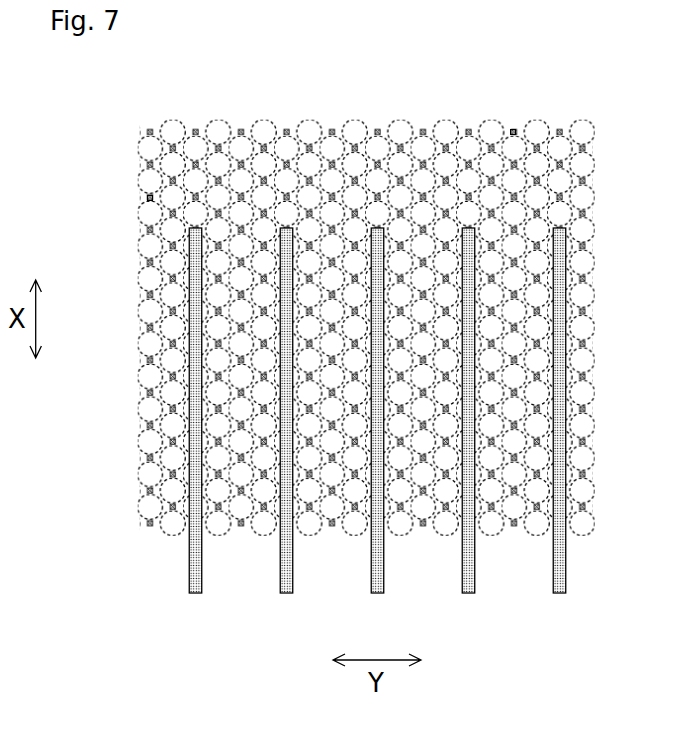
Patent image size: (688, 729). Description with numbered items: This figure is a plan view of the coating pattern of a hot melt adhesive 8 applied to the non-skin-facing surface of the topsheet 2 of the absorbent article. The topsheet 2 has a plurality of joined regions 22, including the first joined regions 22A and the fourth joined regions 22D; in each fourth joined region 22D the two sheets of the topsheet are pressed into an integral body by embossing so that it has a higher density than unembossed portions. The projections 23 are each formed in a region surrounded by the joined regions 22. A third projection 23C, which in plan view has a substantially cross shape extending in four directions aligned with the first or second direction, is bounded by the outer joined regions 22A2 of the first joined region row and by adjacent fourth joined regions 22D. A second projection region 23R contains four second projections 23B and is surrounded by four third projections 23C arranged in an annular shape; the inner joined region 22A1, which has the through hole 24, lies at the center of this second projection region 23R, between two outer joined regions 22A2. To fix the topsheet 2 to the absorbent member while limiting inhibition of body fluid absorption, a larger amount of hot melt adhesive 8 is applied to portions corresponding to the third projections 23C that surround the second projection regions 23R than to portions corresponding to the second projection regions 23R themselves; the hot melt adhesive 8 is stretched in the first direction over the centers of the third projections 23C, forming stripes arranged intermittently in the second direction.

The topsheet 2 is at (615, 155).
The hot melt adhesive 8 is at (196, 594).
The joined regions 22 is at (362, 289).
The first joined regions 22A is at (329, 289).
The inner joined region 22A1 is at (513, 132).
The outer joined region 22A2 is at (147, 166).
The fourth joined region 22D is at (585, 218).
The projections 23 is at (318, 344).
The second projections 23B is at (200, 242).
The third projection 23C is at (498, 548).
The second projection region 23R is at (257, 200).
The through hole 24 is at (513, 132).